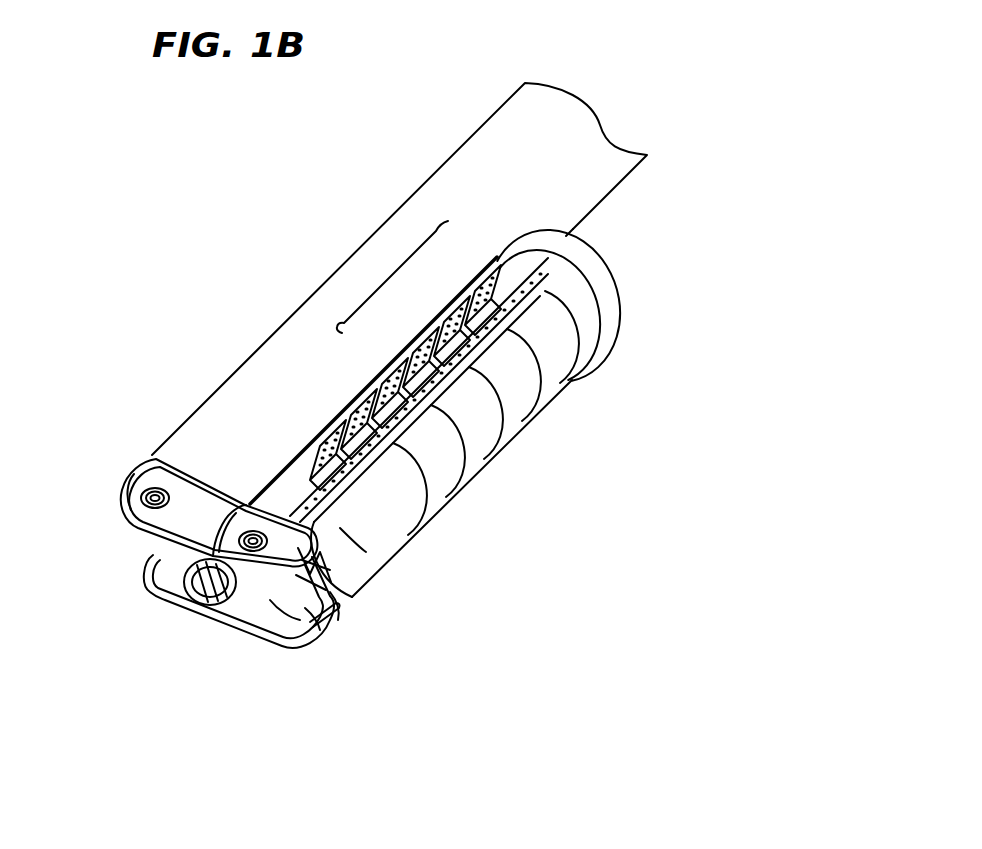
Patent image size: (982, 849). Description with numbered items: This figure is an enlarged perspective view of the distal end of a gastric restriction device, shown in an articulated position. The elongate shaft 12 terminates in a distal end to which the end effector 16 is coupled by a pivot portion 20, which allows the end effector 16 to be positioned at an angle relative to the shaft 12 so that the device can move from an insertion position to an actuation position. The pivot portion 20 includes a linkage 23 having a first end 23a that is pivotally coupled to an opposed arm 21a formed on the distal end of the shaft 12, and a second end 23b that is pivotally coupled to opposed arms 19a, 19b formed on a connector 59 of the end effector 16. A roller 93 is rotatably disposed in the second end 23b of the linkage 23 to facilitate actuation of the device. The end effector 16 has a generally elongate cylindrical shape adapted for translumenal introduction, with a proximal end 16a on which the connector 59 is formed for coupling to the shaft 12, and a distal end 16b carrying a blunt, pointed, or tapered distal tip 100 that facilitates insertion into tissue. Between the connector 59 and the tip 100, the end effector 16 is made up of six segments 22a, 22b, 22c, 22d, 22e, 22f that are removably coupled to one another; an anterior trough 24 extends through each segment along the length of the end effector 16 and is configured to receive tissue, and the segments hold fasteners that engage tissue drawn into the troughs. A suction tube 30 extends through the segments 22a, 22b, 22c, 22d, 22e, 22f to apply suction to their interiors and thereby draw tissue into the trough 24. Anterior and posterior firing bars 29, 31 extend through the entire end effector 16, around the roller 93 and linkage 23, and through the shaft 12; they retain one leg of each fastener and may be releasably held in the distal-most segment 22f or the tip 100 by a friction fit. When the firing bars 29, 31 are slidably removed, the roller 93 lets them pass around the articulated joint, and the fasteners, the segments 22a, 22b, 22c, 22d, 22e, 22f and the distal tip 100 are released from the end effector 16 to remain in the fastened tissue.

The shaft 12 is at (552, 180).
The end effector 16 is at (552, 528).
The proximal end 16a is at (434, 585).
The distal end 16b is at (608, 348).
The opposed arm 19a is at (255, 560).
The opposed arm 19b is at (317, 630).
The pivot portion 20 is at (268, 690).
The opposed arm 21a is at (150, 500).
The segment 22a is at (308, 447).
The segment 22b is at (340, 410).
The segment 22c is at (369, 376).
The segment 22d is at (404, 342).
The segment 22e is at (439, 306).
The segment 22f is at (470, 270).
The linkage 23 is at (207, 535).
The first end 23a is at (110, 478).
The second end 23b is at (348, 624).
The anterior trough 24 is at (377, 277).
The anterior firing bar 29 is at (193, 578).
The suction tube 30 is at (283, 610).
The posterior firing bar 31 is at (323, 627).
The connector 59 is at (363, 550).
The roller 93 is at (268, 593).
The distal tip 100 is at (583, 286).